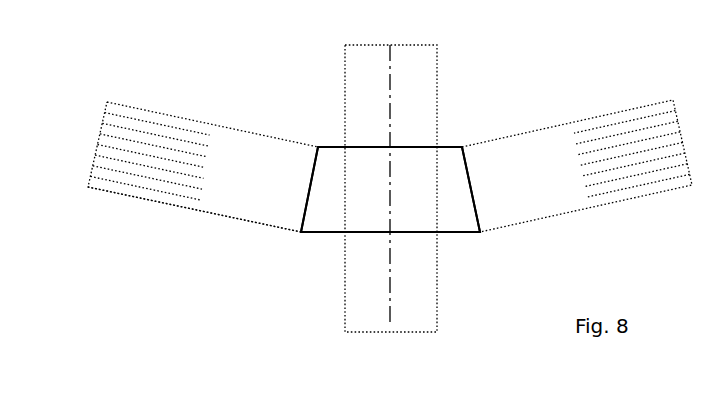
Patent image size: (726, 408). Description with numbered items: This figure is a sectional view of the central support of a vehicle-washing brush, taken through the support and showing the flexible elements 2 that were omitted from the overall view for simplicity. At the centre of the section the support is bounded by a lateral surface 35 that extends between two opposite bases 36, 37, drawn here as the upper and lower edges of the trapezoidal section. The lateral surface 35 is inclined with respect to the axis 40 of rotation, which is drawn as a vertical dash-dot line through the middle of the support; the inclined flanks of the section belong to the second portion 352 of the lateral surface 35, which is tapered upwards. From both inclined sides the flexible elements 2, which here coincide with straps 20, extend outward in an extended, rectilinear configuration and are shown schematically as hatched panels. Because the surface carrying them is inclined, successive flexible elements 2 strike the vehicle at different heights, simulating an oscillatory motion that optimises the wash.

The flexible elements 2 is at (232, 201).
The straps 20 is at (198, 201).
The lateral surface 35 is at (308, 162).
The base 36 is at (332, 137).
The base 37 is at (315, 237).
The second portion 352 is at (313, 195).
The axis of rotation 40 is at (392, 270).